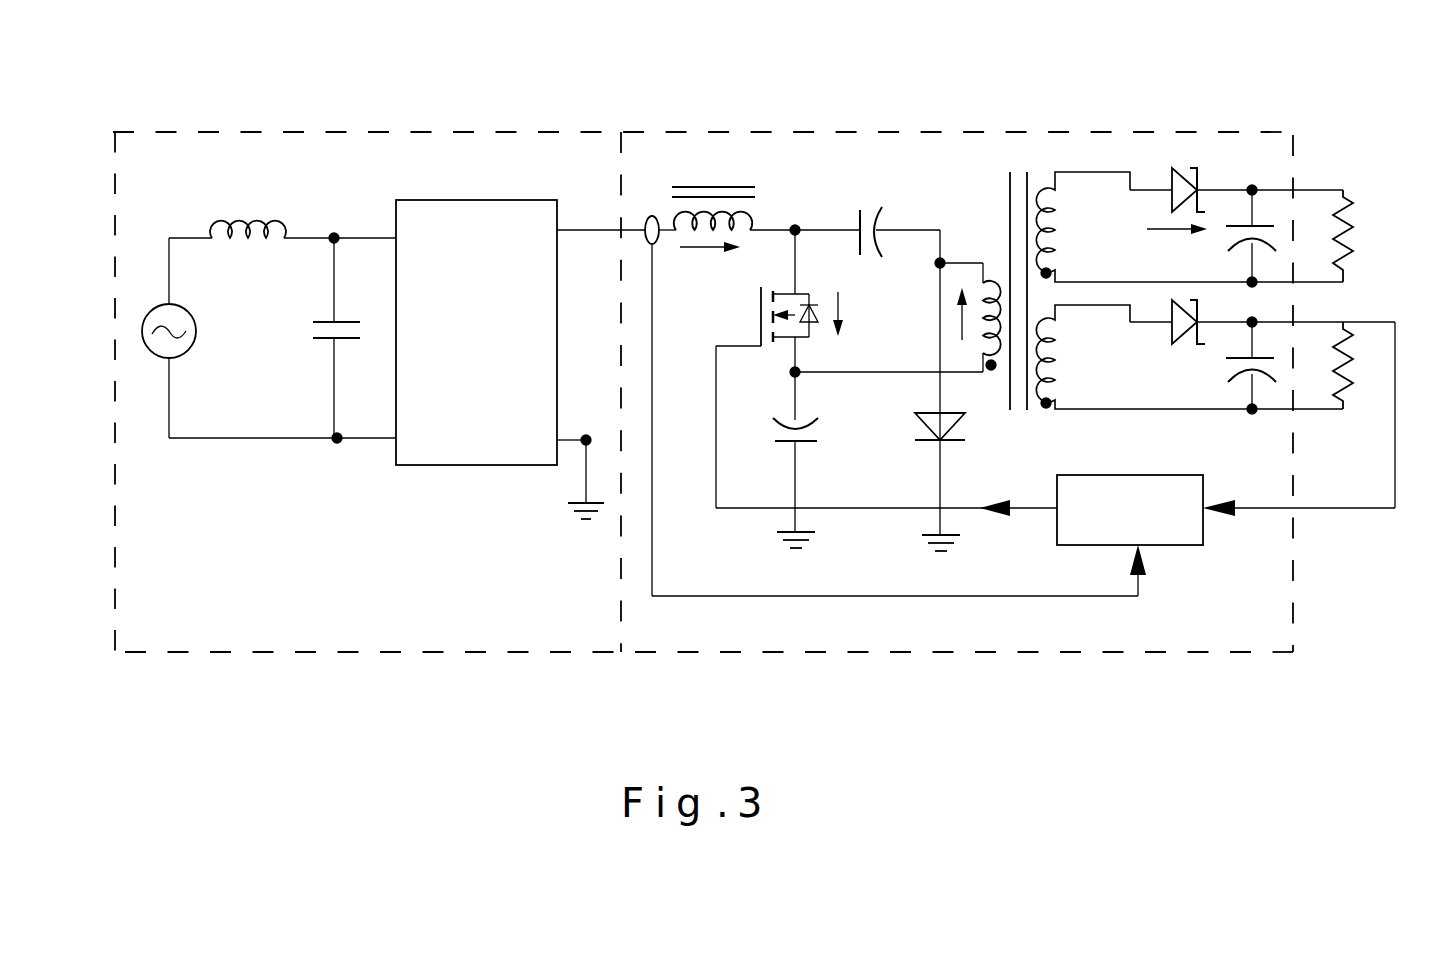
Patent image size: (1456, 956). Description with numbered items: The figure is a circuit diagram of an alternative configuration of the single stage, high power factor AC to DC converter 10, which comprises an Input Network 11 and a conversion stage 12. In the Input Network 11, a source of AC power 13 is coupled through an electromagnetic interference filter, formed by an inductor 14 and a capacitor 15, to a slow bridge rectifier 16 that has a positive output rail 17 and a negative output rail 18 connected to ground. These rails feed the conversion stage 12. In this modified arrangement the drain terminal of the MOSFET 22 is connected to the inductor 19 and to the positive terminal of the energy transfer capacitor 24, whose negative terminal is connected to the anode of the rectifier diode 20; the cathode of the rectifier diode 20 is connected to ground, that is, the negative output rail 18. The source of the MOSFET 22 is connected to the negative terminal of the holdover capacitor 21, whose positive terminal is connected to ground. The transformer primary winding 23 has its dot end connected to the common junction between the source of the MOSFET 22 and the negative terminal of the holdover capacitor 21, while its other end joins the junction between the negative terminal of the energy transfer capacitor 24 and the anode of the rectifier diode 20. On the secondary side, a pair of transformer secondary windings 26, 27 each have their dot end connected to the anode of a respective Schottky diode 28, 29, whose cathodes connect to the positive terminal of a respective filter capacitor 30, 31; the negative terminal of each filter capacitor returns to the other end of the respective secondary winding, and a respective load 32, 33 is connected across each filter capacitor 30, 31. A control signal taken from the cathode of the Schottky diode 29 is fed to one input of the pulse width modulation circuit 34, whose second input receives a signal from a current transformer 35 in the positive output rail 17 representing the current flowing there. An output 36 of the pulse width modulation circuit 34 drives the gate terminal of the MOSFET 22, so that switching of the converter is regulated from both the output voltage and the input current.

The AC to DC converter 10 is at (703, 405).
The Input Network 11 is at (379, 120).
The conversion stage 12 is at (1030, 120).
The source of AC power 13 is at (189, 351).
The inductor 14 is at (278, 226).
The capacitor 15 is at (322, 338).
The slow bridge rectifier 16 is at (470, 465).
The positive output rail 17 is at (580, 226).
The negative output rail 18 is at (588, 436).
The inductor 19 is at (728, 185).
The rectifier diode 20 is at (962, 442).
The holdover capacitor 21 is at (812, 444).
The MOSFET 22 is at (801, 291).
The transformer primary winding 23 is at (990, 282).
The energy transfer capacitor 24 is at (862, 212).
The transformer secondary winding 26 is at (1045, 240).
The transformer secondary winding 27 is at (1045, 369).
The Schottky diode 28 is at (1178, 168).
The Schottky diode 29 is at (1180, 334).
The filter capacitor 30 is at (1262, 222).
The filter capacitor 31 is at (1242, 368).
The load 32 is at (1352, 252).
The load 33 is at (1350, 383).
The pulse width modulation circuit 34 is at (1185, 545).
The current transformer 35 is at (652, 216).
The output 36 is at (1036, 508).